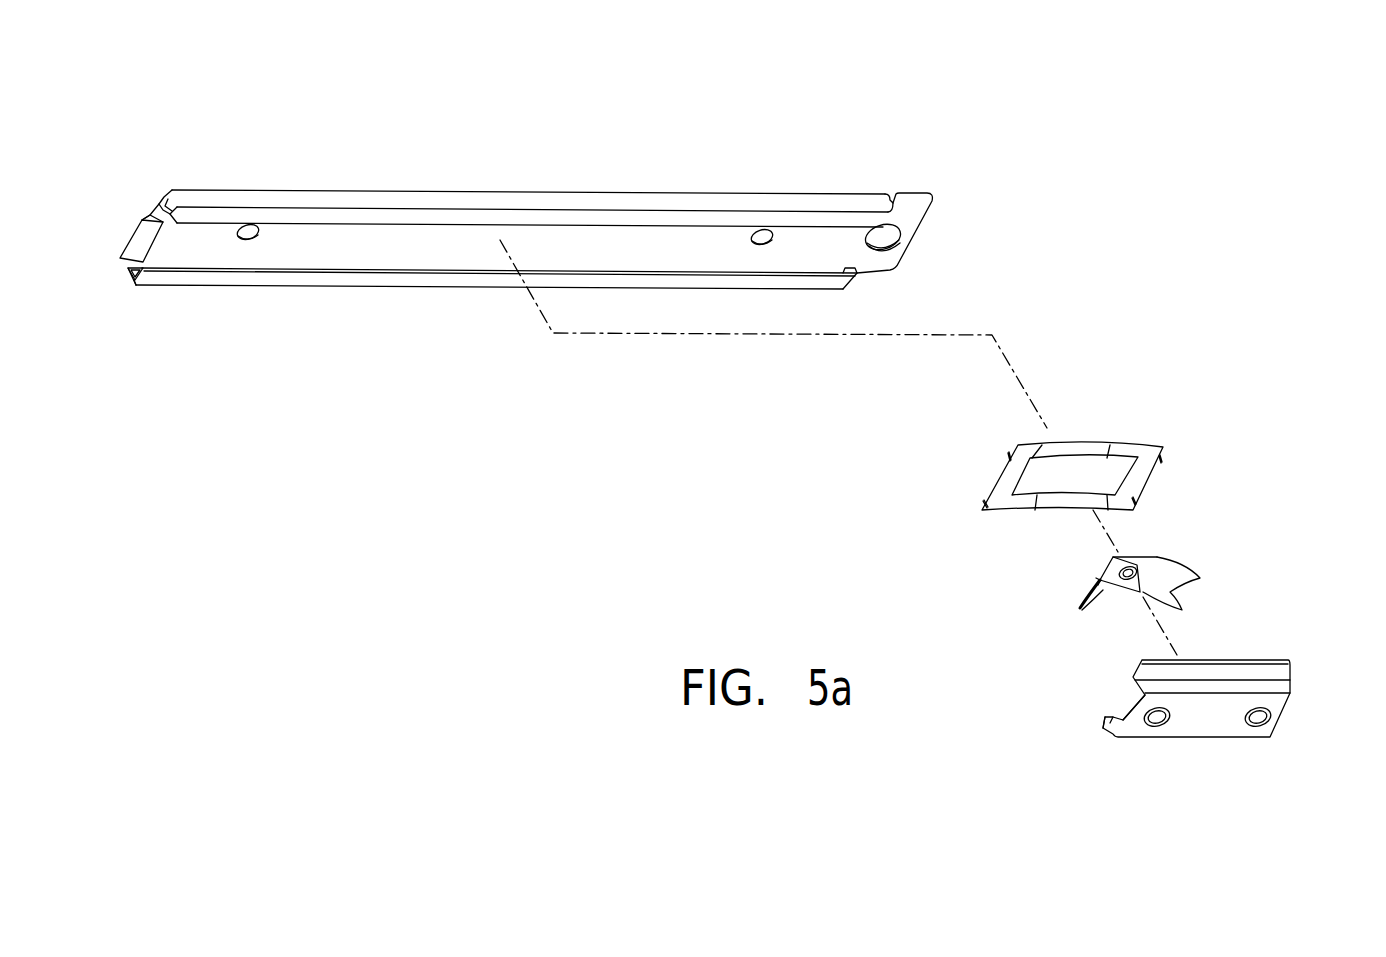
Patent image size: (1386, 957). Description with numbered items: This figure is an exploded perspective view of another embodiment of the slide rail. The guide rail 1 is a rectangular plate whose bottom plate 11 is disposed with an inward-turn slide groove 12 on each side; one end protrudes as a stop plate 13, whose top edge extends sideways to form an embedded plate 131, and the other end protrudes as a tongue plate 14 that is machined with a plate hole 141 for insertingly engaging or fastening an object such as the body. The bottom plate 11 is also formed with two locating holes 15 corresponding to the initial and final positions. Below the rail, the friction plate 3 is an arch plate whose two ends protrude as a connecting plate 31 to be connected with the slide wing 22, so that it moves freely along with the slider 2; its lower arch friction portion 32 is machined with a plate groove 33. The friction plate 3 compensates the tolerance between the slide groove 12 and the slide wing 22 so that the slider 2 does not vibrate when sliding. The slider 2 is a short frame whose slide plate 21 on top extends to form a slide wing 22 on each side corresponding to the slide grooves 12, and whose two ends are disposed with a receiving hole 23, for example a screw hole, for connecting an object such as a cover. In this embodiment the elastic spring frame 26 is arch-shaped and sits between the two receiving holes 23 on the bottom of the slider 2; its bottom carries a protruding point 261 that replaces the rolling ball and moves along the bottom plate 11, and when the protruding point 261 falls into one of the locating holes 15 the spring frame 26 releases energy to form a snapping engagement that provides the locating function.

The guide rail 1 is at (490, 192).
The bottom plate 11 is at (387, 260).
The slide groove 12 is at (167, 202).
The stop plate 13 is at (160, 217).
The embedded plate 131 is at (147, 237).
The tongue plate 14 is at (917, 210).
The plate hole 141 is at (880, 240).
The locating hole 15 is at (768, 230).
The friction plate 3 is at (1140, 472).
The connecting plate 31 is at (1167, 455).
The arch friction portion 32 is at (1090, 445).
The plate groove 33 is at (1053, 472).
The elastic spring frame 26 is at (1112, 590).
The protruding point 261 is at (1137, 565).
The slider 2 is at (1178, 730).
The slide plate 21 is at (1220, 727).
The slide wing 22 is at (1285, 673).
The receiving hole 23 is at (1257, 727).